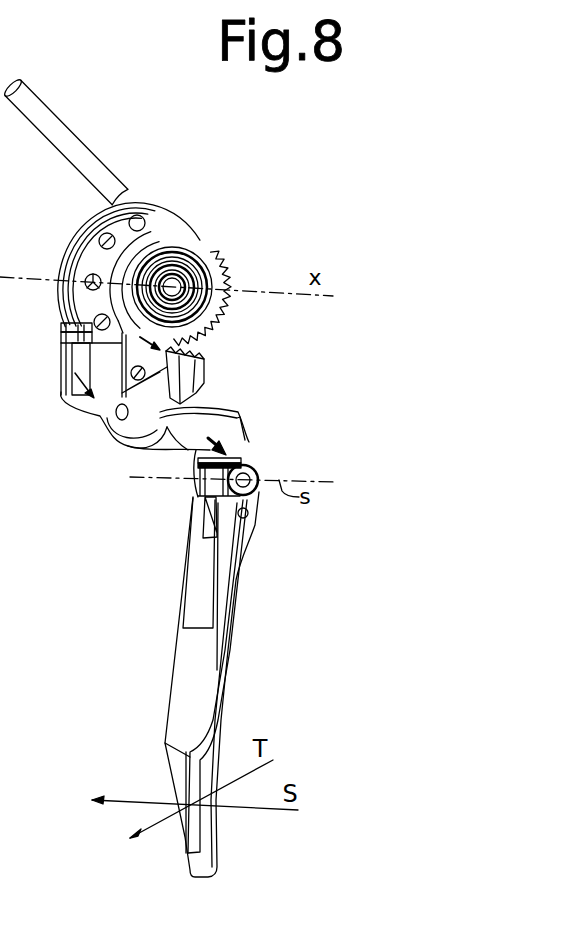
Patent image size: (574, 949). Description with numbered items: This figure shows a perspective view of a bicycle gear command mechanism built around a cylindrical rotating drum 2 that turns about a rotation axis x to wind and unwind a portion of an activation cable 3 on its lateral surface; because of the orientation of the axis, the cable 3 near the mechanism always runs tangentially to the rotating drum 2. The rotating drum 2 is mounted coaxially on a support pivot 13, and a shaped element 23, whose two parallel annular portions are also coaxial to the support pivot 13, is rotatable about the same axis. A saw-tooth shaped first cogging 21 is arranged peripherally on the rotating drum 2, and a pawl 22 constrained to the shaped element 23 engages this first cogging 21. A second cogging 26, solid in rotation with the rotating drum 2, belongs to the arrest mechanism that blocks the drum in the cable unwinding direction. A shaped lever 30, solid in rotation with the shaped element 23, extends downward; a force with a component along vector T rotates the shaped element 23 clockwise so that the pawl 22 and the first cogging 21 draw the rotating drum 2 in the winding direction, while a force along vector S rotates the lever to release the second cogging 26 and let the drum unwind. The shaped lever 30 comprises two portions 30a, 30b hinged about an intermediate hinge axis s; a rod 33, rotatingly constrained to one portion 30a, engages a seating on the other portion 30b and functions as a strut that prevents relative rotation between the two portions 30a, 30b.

The rotating drum 2 is at (180, 212).
The activation cable 3 is at (115, 196).
The support pivot 13 is at (172, 287).
The first cogging 21 is at (72, 332).
The pawl 22 is at (61, 392).
The shaped element 23 is at (204, 361).
The second cogging 26 is at (225, 305).
The shaped lever 30 is at (233, 597).
The first portion of the shaped lever 30a is at (230, 453).
The second portion of the shaped lever 30b is at (207, 573).
The rod 33 is at (198, 503).